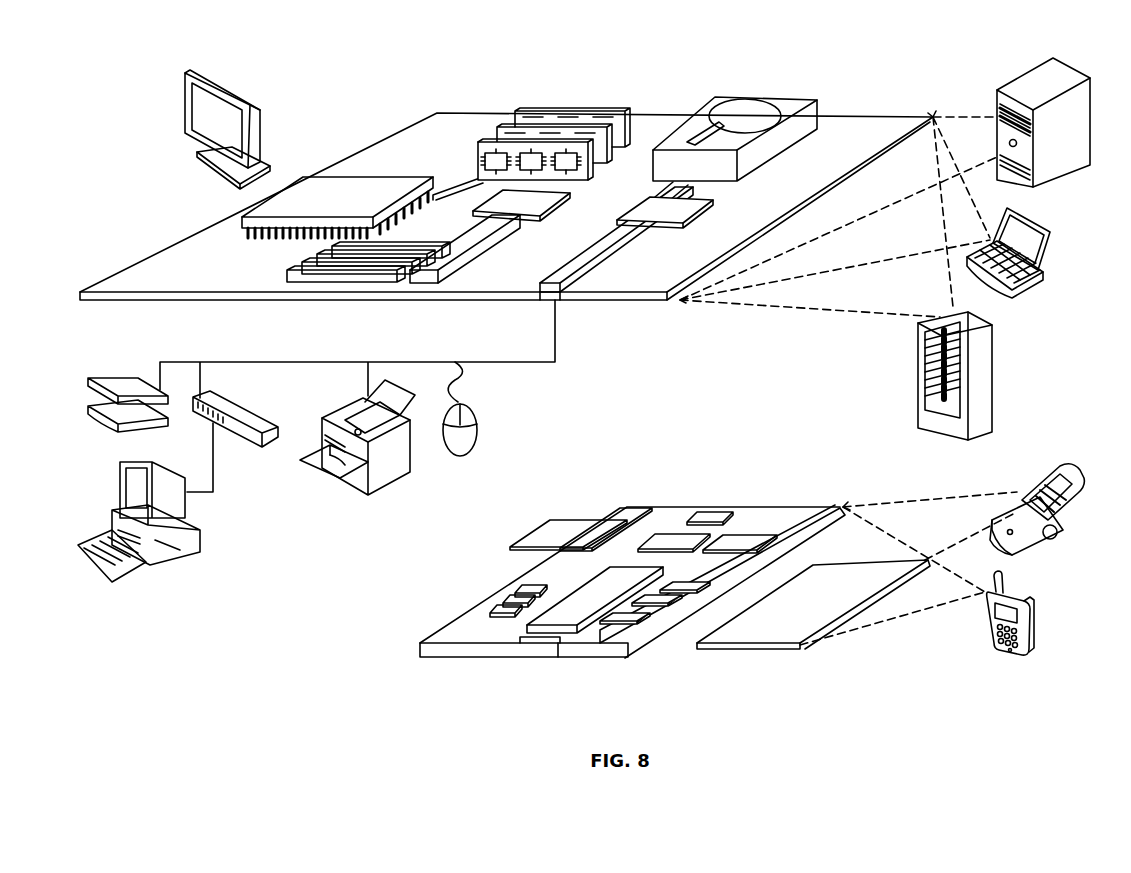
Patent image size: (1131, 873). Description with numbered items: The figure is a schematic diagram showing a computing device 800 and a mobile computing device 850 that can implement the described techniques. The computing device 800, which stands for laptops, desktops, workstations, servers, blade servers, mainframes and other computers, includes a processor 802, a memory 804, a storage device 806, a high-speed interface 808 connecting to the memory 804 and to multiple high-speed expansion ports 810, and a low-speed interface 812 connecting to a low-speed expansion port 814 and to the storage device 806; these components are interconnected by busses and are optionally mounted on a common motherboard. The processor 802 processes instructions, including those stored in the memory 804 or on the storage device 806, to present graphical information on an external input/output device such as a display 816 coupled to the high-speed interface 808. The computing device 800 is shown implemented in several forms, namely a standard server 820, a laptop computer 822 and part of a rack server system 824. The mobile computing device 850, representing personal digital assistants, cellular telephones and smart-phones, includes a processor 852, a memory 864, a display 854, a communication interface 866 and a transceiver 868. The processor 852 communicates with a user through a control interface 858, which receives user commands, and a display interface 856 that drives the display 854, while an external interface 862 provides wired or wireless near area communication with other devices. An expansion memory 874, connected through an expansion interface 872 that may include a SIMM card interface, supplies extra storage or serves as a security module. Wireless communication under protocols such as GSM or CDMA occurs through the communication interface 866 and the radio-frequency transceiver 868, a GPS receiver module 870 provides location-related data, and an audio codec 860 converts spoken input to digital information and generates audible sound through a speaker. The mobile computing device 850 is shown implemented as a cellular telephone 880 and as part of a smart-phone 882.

The computing device 800 is at (357, 88).
The processor 802 is at (242, 219).
The memory 804 is at (541, 124).
The storage device 806 is at (733, 112).
The high-speed interface 808 is at (498, 200).
The high-speed expansion ports 810 is at (293, 271).
The low-speed interface 812 is at (647, 203).
The low-speed expansion port 814 is at (560, 292).
The display 816 is at (191, 75).
The standard server 820 is at (998, 110).
The laptop computer 822 is at (1047, 234).
The rack server system 824 is at (919, 404).
The mobile computing device 850 is at (400, 656).
The processor 852 is at (572, 617).
The display 854 is at (773, 632).
The display interface 856 is at (633, 623).
The control interface 858 is at (660, 607).
The audio codec 860 is at (683, 590).
The external interface 862 is at (543, 645).
The memory 864 is at (505, 606).
The communication interface 866 is at (677, 542).
The transceiver 868 is at (733, 540).
The GPS receiver module 870 is at (717, 517).
The expansion interface 872 is at (602, 524).
The expansion memory 874 is at (548, 528).
The cellular telephone 880 is at (1028, 484).
The smart-phone 882 is at (990, 620).